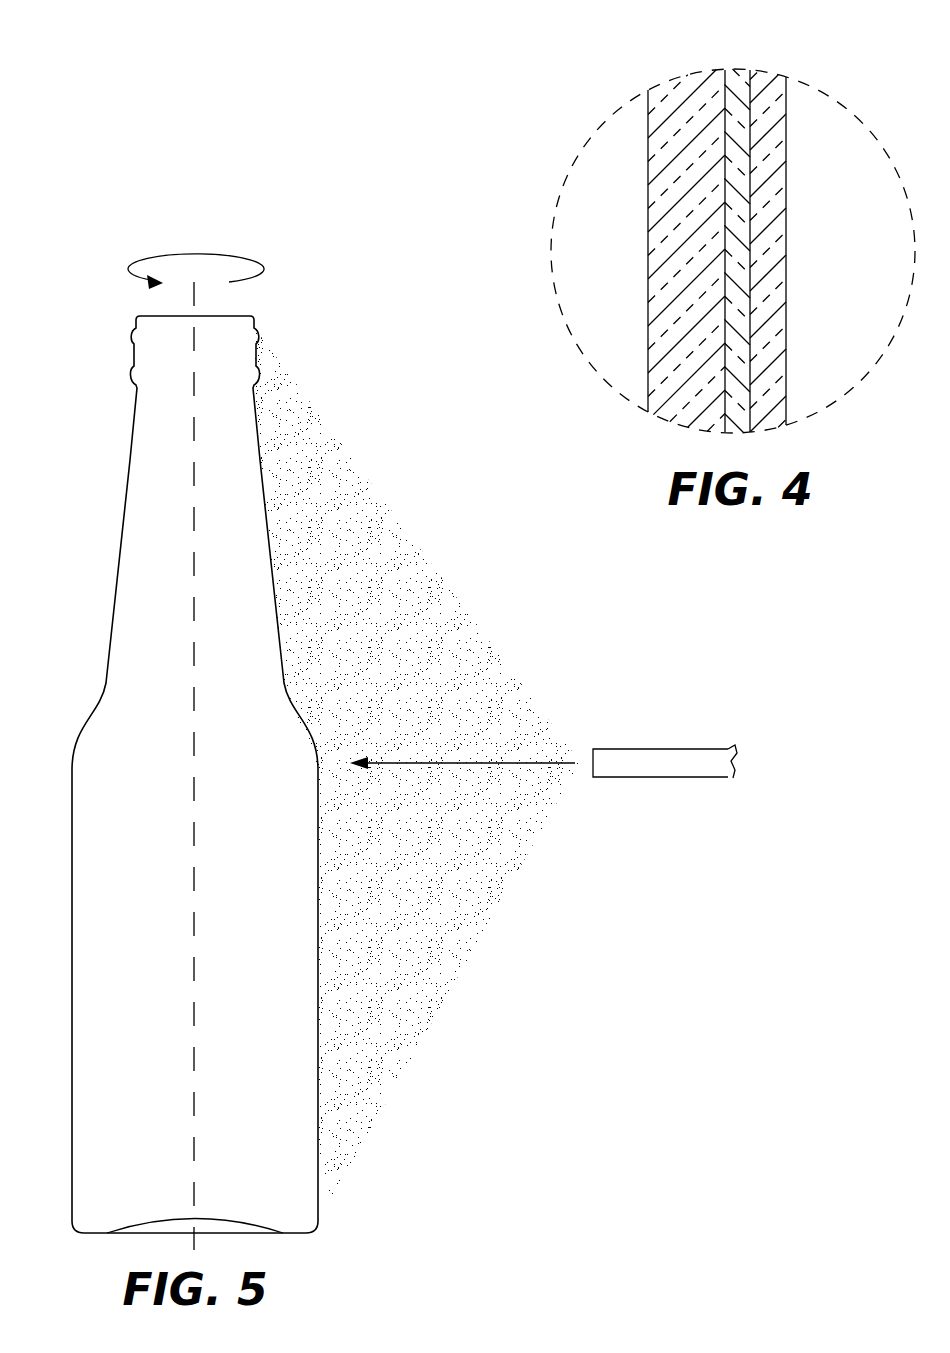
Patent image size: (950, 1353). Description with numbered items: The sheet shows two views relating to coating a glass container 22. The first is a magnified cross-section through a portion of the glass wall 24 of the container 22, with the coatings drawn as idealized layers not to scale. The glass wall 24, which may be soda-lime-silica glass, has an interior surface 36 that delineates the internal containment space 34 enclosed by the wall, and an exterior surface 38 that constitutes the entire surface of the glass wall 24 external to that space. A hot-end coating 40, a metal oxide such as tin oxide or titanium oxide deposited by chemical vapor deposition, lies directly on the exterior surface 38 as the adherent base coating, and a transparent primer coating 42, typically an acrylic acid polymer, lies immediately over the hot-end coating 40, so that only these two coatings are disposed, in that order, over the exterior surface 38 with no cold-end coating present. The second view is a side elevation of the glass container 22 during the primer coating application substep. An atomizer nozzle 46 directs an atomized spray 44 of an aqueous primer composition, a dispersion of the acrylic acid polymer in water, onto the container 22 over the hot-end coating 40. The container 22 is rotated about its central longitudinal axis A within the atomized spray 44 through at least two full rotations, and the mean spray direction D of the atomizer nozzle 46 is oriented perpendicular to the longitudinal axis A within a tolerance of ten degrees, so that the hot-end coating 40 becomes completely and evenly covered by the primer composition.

In FIG. 5, the glass container 22 is at (96, 390).
In FIG. 4, the glass wall 24 is at (696, 199).
In FIG. 4, the internal containment space 34 is at (600, 291).
In FIG. 4, the interior surface 36 is at (648, 128).
In FIG. 4, the exterior surface 38 is at (727, 88).
In FIG. 4, the hot-end coating 40 is at (738, 138).
In FIG. 4, the primer coating 42 is at (768, 188).
In FIG. 5, the atomized spray 44 is at (380, 572).
In FIG. 5, the atomizer nozzle 46 is at (646, 766).
In FIG. 5, the mean spray direction D is at (460, 762).
In FIG. 5, the central longitudinal axis A is at (194, 868).